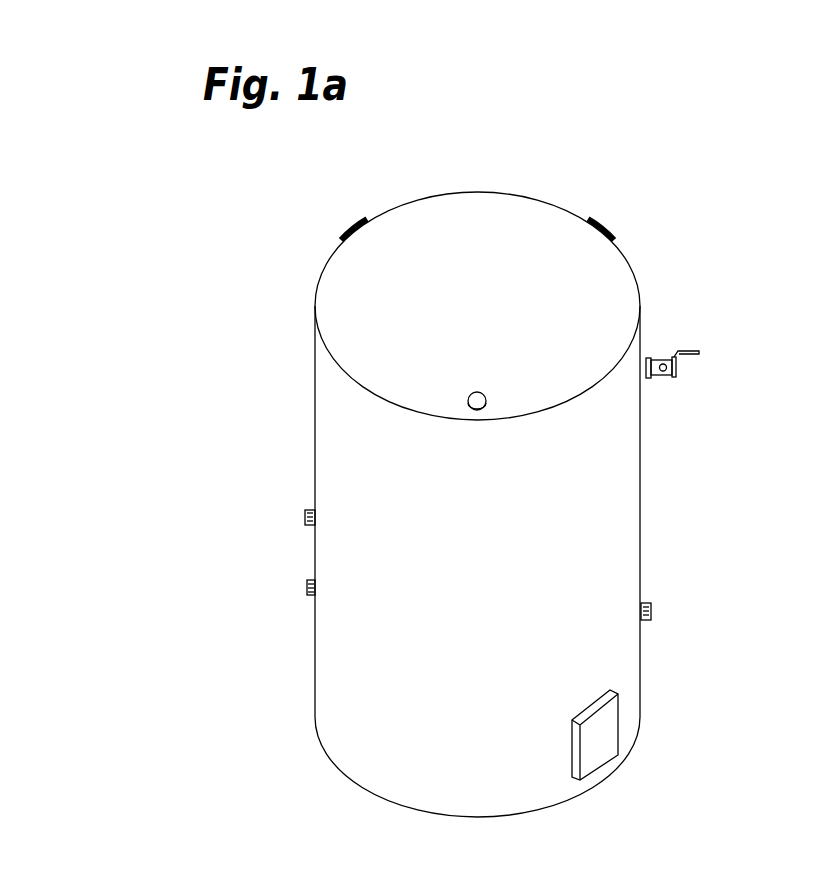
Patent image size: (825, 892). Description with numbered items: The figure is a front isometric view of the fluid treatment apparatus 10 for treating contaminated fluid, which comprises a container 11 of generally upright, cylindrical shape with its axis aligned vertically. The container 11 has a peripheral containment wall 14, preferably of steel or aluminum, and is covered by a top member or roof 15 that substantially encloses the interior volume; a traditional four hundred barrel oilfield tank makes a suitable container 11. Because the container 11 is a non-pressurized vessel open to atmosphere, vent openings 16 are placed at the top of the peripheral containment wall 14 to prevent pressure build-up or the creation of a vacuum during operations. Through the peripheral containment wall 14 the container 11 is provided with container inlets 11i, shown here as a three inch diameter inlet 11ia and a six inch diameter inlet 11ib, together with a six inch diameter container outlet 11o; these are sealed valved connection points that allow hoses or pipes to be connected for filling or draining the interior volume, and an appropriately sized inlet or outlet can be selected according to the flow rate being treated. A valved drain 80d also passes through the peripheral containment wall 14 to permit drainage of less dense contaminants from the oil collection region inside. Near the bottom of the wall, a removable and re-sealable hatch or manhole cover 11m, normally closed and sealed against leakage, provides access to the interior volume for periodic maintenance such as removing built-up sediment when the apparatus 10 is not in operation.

The fluid treatment apparatus 10 is at (589, 160).
The top member or roof 15 is at (486, 315).
The vent openings 16 is at (340, 225).
The container 11 is at (477, 561).
The peripheral containment wall 14 is at (494, 628).
The container inlets 11i is at (241, 552).
The three inch diameter inlet 11ia is at (298, 518).
The six inch diameter inlet 11ib is at (298, 588).
The container outlet 11o is at (668, 606).
The valved drain 80d is at (681, 343).
The hatch or manhole cover 11m is at (611, 755).